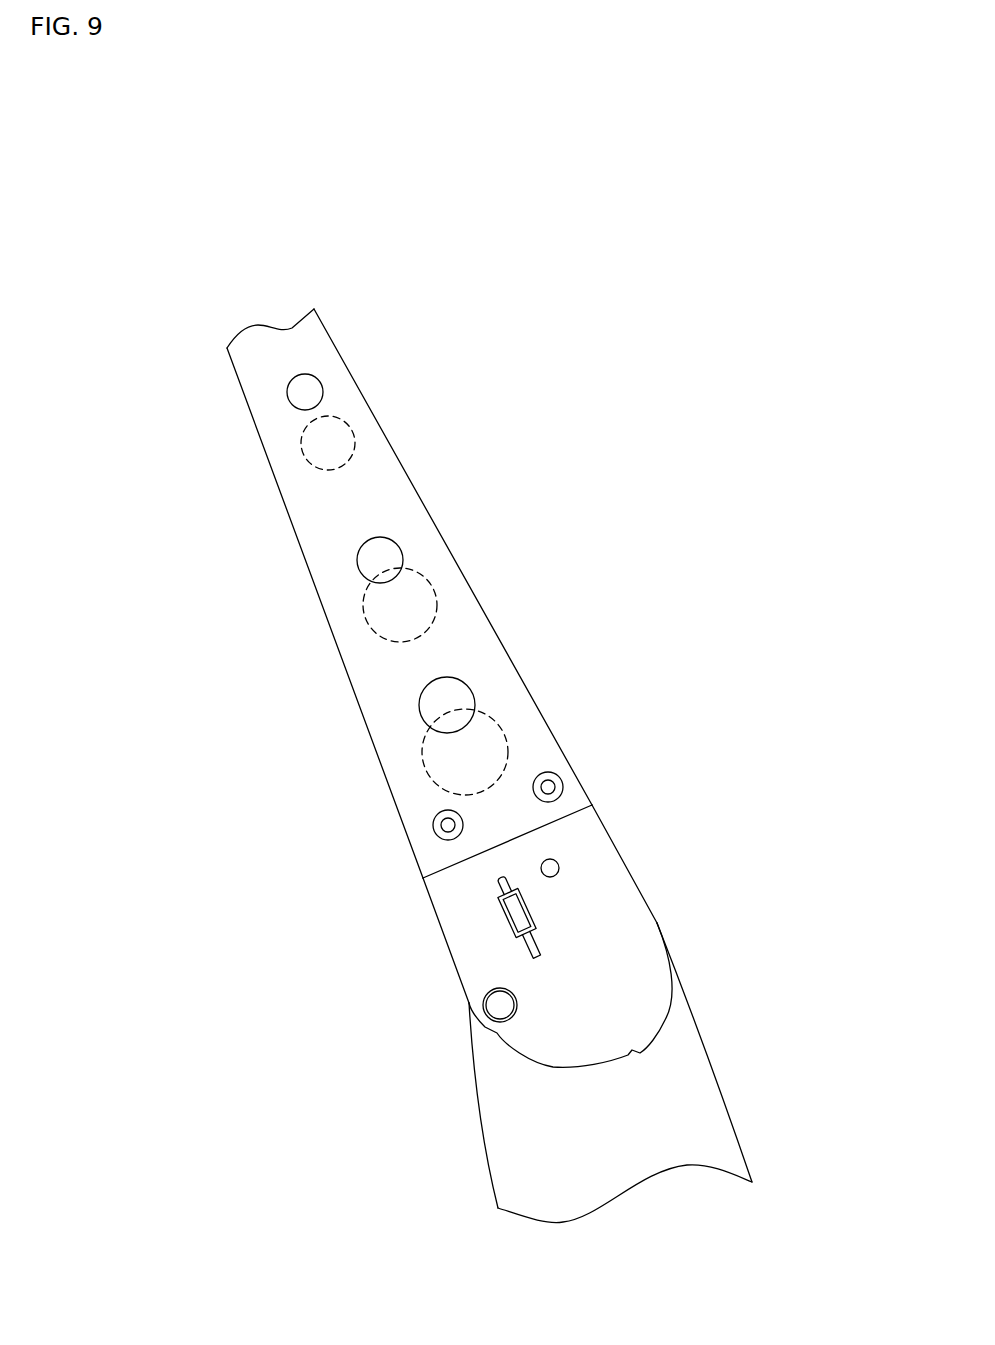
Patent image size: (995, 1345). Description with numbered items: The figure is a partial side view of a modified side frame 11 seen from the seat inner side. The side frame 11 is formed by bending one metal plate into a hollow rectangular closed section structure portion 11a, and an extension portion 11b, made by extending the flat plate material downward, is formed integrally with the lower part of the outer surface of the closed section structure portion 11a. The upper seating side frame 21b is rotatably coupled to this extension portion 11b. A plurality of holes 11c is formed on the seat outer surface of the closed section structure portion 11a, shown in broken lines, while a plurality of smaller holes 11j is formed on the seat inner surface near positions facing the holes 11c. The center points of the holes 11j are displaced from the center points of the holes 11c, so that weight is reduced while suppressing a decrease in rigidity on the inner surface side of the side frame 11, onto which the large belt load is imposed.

The side frame 11 is at (152, 266).
The closed section structure portion 11a is at (324, 350).
The extension portion 11b is at (616, 880).
The holes 11c is at (355, 435).
The holes 11j is at (287, 390).
The upper seating side frame 21b is at (700, 1093).